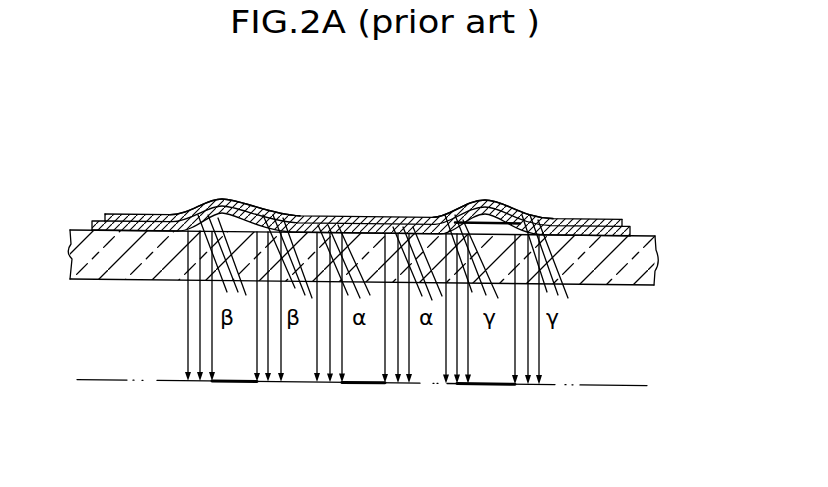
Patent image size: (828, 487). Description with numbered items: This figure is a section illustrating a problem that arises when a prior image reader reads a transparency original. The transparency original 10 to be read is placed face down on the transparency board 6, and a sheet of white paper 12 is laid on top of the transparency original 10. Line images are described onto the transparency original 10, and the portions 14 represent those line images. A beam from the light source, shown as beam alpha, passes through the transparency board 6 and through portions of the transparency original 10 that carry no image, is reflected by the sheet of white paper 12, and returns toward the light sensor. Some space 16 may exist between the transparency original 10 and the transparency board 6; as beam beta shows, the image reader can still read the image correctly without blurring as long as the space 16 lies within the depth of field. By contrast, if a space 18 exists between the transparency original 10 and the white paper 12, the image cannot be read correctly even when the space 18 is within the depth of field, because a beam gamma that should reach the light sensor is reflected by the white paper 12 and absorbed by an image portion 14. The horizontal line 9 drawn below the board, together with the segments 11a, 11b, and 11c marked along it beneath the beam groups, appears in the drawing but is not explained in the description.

The transparency original 10 is at (628, 232).
The sheet of white paper 12 is at (592, 221).
The portions 14 is at (233, 198).
The space 16 is at (215, 250).
The space 18 is at (480, 218).
The transparency board 6 is at (611, 282).
The image plane 9 is at (617, 385).
The exposed region a 11a is at (362, 388).
The exposed region b 11b is at (230, 384).
The exposed region c 11c is at (492, 388).